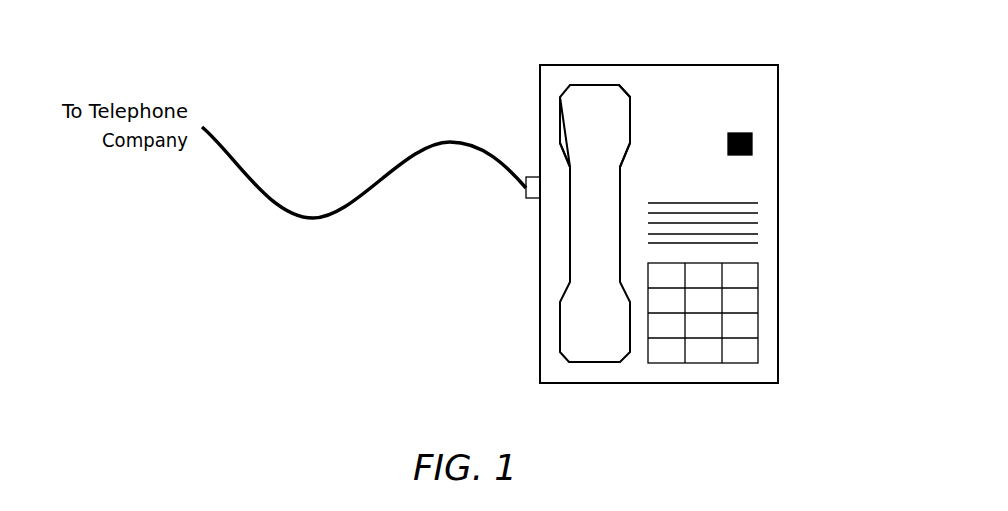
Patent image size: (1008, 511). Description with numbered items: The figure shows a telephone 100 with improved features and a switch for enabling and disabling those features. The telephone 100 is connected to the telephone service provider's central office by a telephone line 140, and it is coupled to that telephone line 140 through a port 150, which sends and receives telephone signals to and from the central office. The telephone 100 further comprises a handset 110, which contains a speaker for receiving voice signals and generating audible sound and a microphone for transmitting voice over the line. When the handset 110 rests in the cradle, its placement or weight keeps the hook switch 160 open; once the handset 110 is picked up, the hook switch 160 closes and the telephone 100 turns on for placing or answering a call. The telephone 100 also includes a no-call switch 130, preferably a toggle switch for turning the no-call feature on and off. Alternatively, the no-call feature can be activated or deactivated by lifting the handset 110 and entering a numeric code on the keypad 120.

The telephone 100 is at (778, 135).
The handset 110 is at (585, 215).
The keypad 120 is at (748, 327).
The no-call switch 130 is at (752, 155).
The telephone line 140 is at (280, 213).
The port 150 is at (526, 192).
The hook switch 160 is at (600, 98).